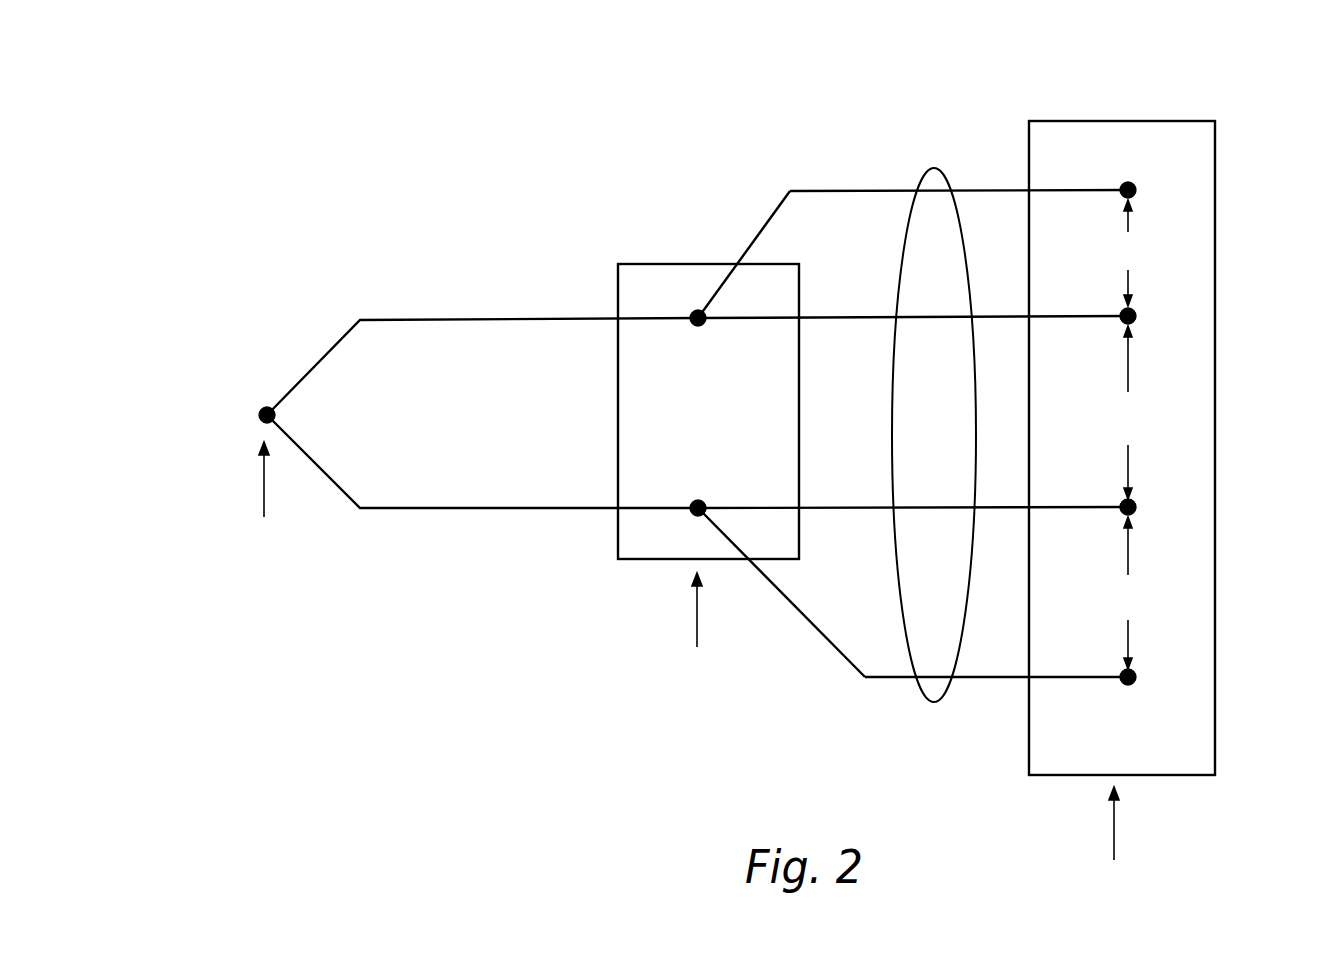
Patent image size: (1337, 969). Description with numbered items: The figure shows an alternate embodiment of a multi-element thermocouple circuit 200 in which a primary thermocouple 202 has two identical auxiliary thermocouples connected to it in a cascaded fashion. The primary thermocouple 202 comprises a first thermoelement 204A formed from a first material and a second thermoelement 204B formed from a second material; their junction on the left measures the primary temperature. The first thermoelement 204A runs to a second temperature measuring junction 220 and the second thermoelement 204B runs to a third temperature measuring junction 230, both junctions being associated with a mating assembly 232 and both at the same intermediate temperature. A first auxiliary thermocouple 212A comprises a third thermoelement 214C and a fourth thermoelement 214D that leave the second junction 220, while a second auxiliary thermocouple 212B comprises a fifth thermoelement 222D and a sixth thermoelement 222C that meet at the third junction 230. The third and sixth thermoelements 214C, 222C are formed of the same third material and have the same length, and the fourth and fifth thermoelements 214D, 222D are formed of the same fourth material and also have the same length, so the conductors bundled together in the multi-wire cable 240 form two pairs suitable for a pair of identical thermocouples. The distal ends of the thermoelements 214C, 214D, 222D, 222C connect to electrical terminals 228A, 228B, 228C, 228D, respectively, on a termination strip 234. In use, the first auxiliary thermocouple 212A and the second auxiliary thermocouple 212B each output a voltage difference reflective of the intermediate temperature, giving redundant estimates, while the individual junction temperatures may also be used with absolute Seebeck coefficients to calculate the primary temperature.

The multi-element thermocouple circuit 200 is at (200, 170).
The primary thermocouple 202 is at (300, 372).
The first thermoelement 204A is at (436, 318).
The second thermoelement 204B is at (412, 510).
The first auxiliary thermocouple 212A is at (732, 216).
The second auxiliary thermocouple 212B is at (771, 636).
The third thermoelement 214C is at (836, 188).
The fourth thermoelement 214D is at (840, 313).
The second temperature measuring junction 220 is at (694, 324).
The sixth thermoelement 222C is at (875, 672).
The fifth thermoelement 222D is at (845, 505).
The electrical terminal 228A is at (1136, 188).
The electrical terminal 228B is at (1136, 314).
The electrical terminal 228C is at (1136, 503).
The electrical terminal 228D is at (1136, 672).
The third temperature measuring junction 230 is at (698, 500).
The mating assembly 232 is at (624, 561).
The termination strip 234 is at (1150, 120).
The multi-wire cable 240 is at (934, 702).